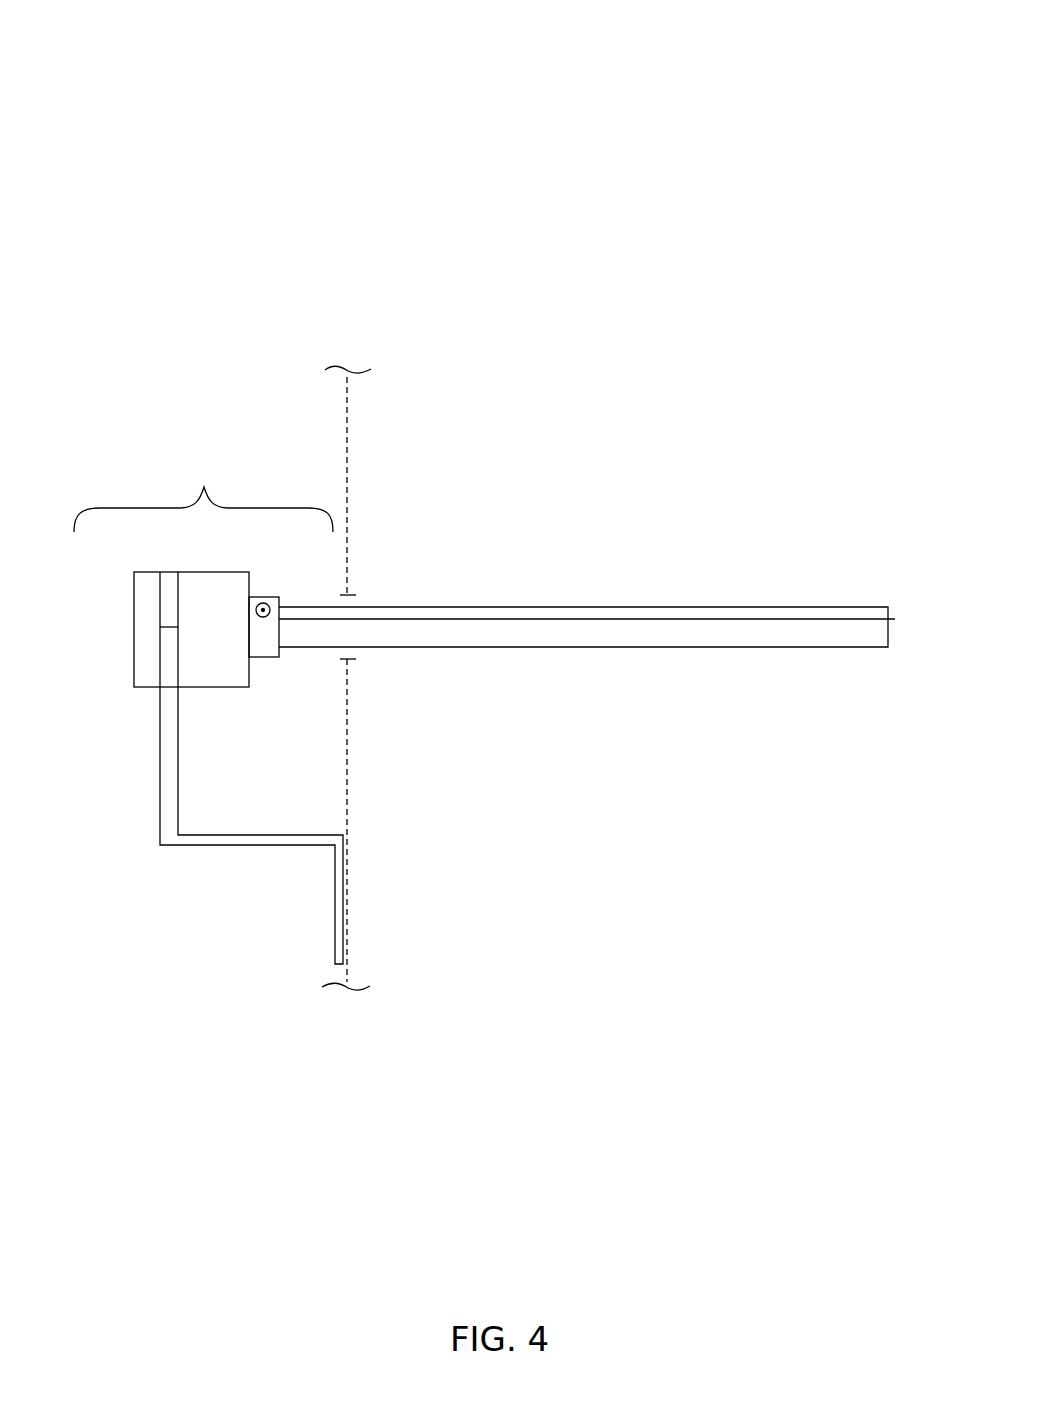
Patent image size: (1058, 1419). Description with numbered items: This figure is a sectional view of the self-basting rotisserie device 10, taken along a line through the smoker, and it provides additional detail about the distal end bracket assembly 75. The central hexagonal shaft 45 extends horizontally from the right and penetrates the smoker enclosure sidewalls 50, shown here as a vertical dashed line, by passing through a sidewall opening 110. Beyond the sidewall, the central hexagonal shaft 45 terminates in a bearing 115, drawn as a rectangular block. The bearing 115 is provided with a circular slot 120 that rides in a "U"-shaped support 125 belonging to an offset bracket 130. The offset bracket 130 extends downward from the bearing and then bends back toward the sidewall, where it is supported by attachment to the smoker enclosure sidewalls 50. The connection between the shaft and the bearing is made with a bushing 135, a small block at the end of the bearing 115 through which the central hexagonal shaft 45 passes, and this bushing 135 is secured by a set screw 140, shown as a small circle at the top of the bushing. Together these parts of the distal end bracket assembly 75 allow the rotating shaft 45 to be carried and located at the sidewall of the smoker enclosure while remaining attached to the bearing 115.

The device 10 is at (157, 191).
The central hexagonal shaft 45 is at (583, 633).
The smoker enclosure sidewalls 50 is at (348, 465).
The distal end bracket assembly 75 is at (204, 480).
The sidewall opening 110 is at (358, 662).
The bearing 115 is at (205, 678).
The circular slot 120 is at (169, 588).
The U-shaped support 125 is at (169, 656).
The offset bracket 130 is at (242, 843).
The bushing 135 is at (268, 647).
The set screw 140 is at (270, 603).